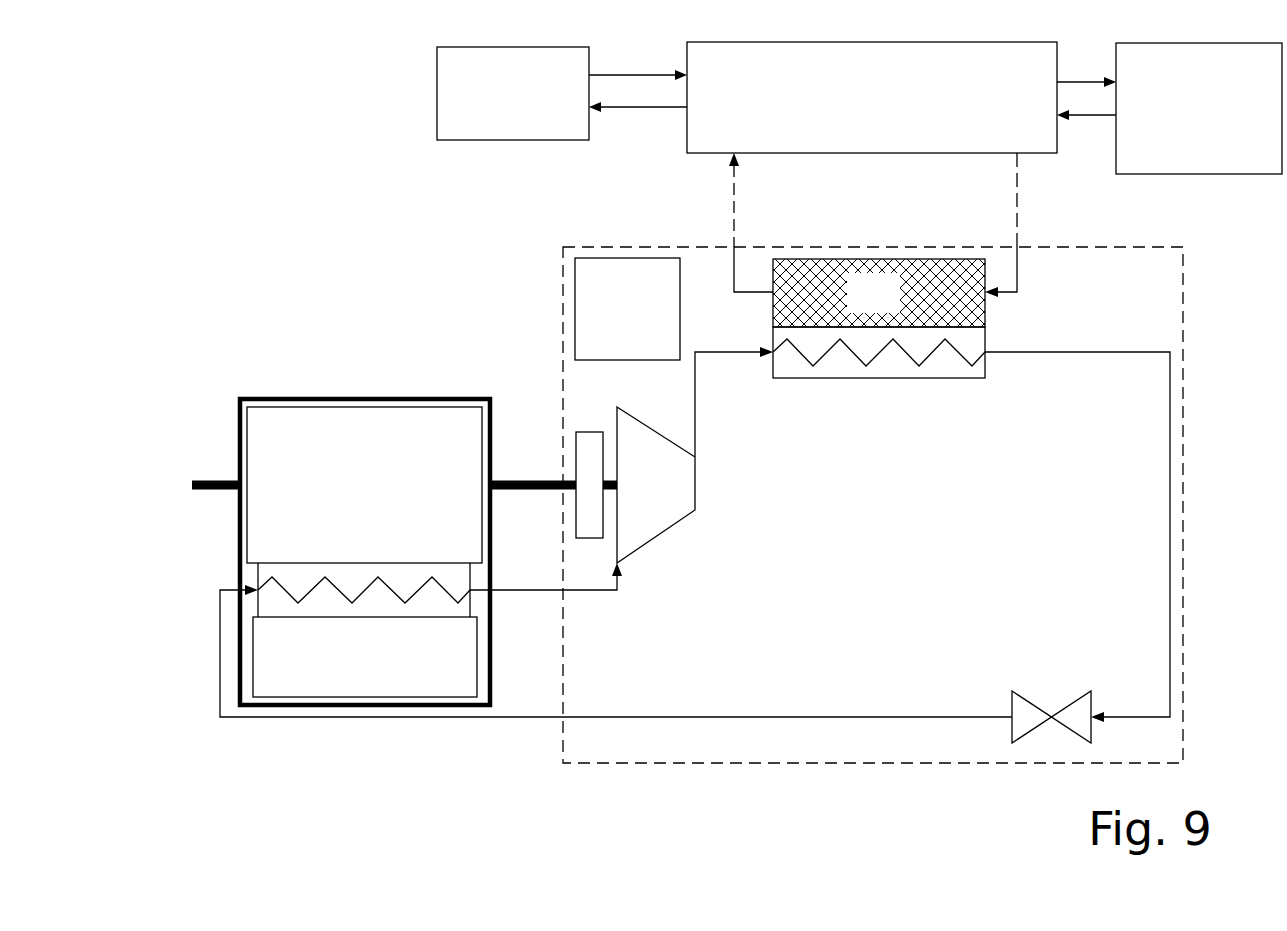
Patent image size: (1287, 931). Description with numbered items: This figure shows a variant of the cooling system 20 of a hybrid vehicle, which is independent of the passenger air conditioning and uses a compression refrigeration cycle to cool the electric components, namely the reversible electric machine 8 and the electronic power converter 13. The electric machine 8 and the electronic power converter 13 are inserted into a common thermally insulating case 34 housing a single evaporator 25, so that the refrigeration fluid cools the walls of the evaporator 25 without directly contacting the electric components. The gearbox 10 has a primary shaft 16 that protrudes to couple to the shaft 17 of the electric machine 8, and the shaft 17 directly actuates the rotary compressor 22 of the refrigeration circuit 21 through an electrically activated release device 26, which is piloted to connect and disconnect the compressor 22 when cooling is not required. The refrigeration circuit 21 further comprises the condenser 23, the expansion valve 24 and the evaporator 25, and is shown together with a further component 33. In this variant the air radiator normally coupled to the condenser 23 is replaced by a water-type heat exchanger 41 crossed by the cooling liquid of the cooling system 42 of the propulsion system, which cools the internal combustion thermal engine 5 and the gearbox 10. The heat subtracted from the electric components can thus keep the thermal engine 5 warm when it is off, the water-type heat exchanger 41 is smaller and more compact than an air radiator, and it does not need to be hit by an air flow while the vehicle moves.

The internal combustion thermal engine 5 is at (1199, 108).
The reversible electric machine 8 is at (364, 485).
The gearbox 10 is at (513, 93).
The electronic power converter 13 is at (365, 657).
The primary shaft 16 is at (213, 478).
The shaft of the electric machine 17 is at (530, 478).
The cooling system 20 is at (498, 791).
The refrigeration circuit 21 is at (1210, 496).
The compressor 22 is at (656, 485).
The condenser 23 is at (838, 366).
The expansion valve 24 is at (1081, 708).
The evaporator 25 is at (462, 604).
The electrically activated release device 26 is at (592, 440).
The pump 33 is at (627, 309).
The thermally insulating case 34 is at (345, 413).
The water-type heat exchanger 41 is at (879, 293).
The cooling system of the propulsion system 42 is at (872, 97).